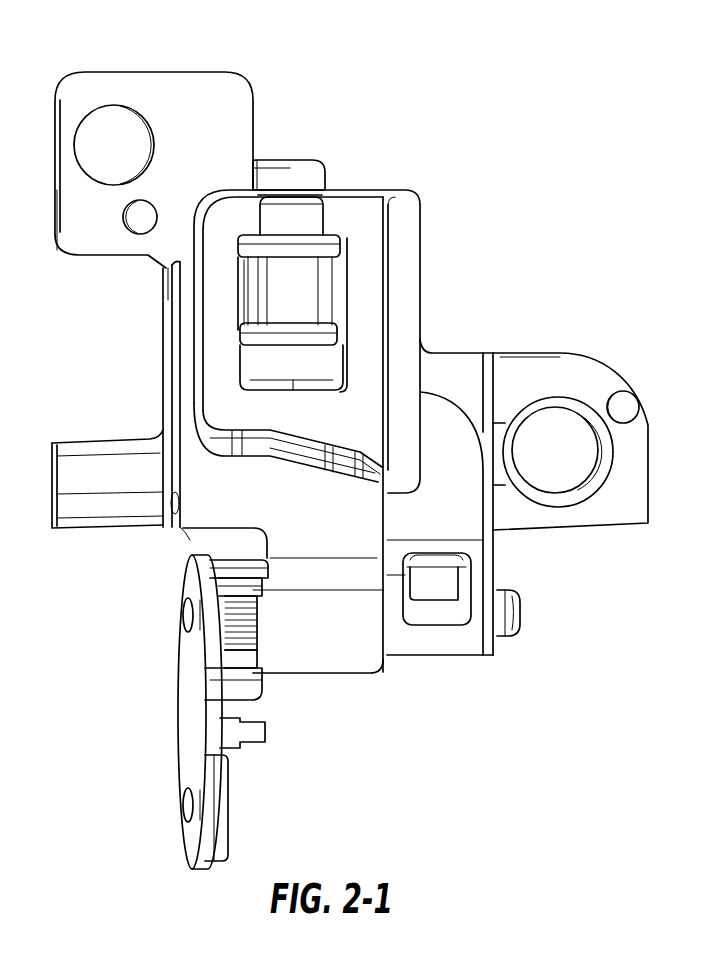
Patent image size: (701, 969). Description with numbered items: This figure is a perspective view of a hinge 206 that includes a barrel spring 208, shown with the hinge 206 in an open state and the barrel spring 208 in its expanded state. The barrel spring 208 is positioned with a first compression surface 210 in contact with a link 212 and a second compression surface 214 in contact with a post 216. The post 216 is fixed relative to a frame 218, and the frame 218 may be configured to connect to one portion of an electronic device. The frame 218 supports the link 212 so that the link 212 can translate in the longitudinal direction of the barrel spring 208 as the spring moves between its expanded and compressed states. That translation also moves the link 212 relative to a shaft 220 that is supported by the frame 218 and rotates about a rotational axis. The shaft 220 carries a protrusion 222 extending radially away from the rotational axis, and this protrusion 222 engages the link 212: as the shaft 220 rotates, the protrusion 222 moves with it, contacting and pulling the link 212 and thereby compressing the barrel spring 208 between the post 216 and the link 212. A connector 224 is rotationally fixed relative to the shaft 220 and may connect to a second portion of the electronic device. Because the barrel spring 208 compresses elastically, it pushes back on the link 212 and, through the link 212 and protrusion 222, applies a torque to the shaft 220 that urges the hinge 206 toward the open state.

The hinge 206 is at (554, 86).
The barrel spring 208 is at (343, 233).
The first compression surface 210 is at (387, 190).
The link 212 is at (363, 267).
The second compression surface 214 is at (303, 280).
The post 216 is at (325, 362).
The frame 218 is at (170, 527).
The shaft 220 is at (450, 612).
The protrusion 222 is at (447, 577).
The connector 224 is at (180, 782).